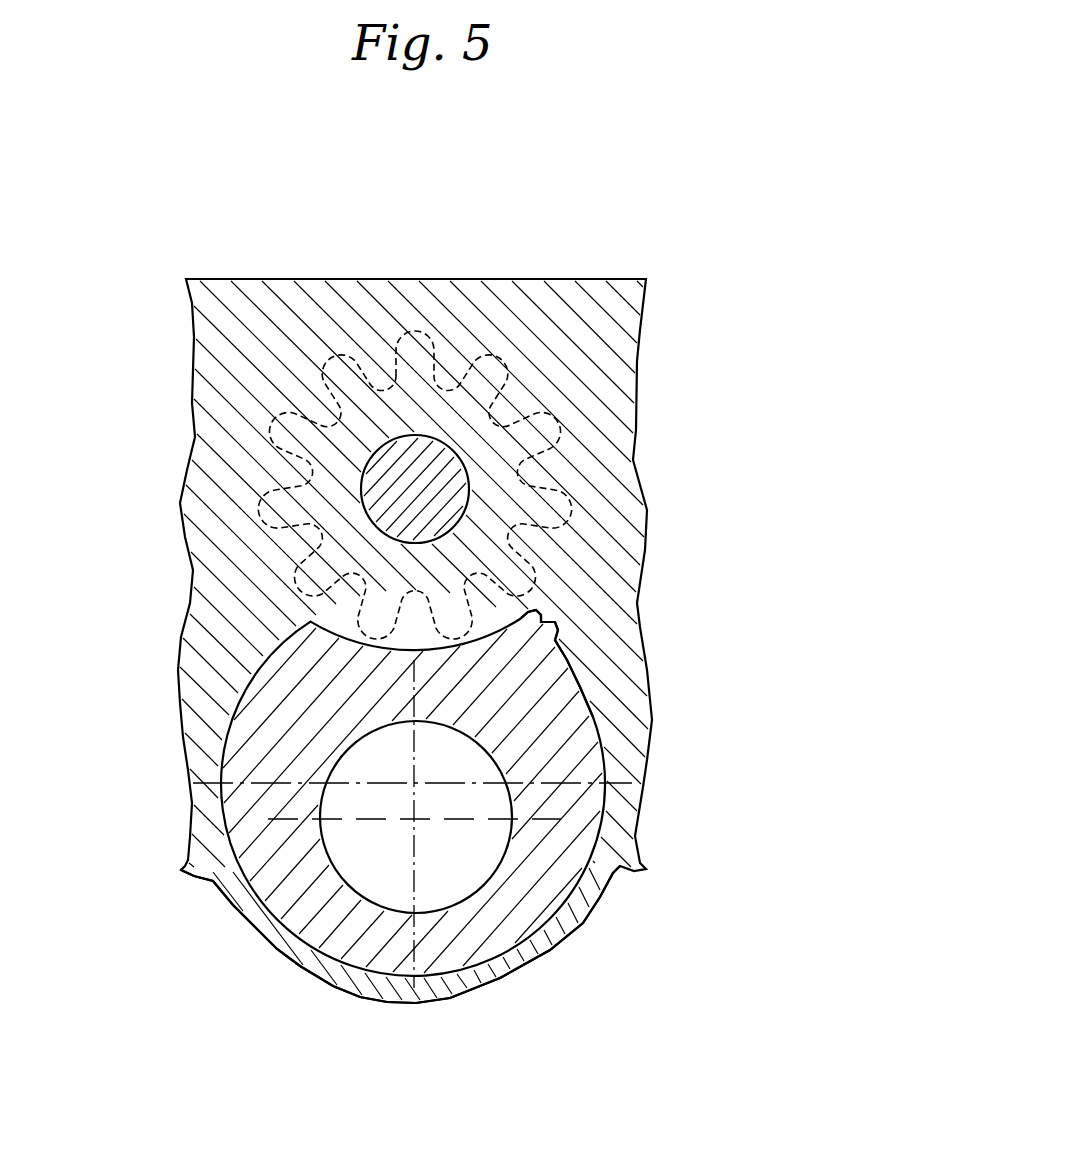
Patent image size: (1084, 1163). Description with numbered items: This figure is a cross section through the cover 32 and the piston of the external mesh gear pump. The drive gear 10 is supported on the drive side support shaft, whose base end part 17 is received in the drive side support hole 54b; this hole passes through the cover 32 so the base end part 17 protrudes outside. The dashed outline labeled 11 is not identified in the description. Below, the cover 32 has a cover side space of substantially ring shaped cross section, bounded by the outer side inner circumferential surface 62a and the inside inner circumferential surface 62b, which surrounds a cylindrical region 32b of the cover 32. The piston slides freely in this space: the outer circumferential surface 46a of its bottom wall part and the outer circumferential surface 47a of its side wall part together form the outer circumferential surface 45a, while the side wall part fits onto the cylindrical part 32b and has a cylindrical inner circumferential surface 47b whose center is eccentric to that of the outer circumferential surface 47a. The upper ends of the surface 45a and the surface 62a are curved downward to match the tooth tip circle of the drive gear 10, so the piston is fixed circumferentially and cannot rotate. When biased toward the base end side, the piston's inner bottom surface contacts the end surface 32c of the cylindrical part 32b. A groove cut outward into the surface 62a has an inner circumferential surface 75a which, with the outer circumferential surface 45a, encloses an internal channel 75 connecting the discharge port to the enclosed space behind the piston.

The drive gear 10 is at (557, 497).
The rotor (hidden) 11 is at (267, 425).
The base end part 17 is at (398, 472).
The cover 32 is at (563, 279).
The cylindrical part 32b is at (508, 893).
The end surface 32c is at (350, 873).
The outer circumferential surface 45a is at (605, 775).
The outer circumferential surface 46a is at (413, 793).
The outer circumferential surface 47a is at (413, 793).
The inner circumferential surface 47b is at (322, 842).
The drive side support hole 54b is at (397, 450).
The outer side inner circumferential surface 62a is at (439, 966).
The inside inner circumferential surface 62b is at (372, 907).
The internal channel 75 is at (567, 638).
The inner circumferential surface 75a is at (538, 611).